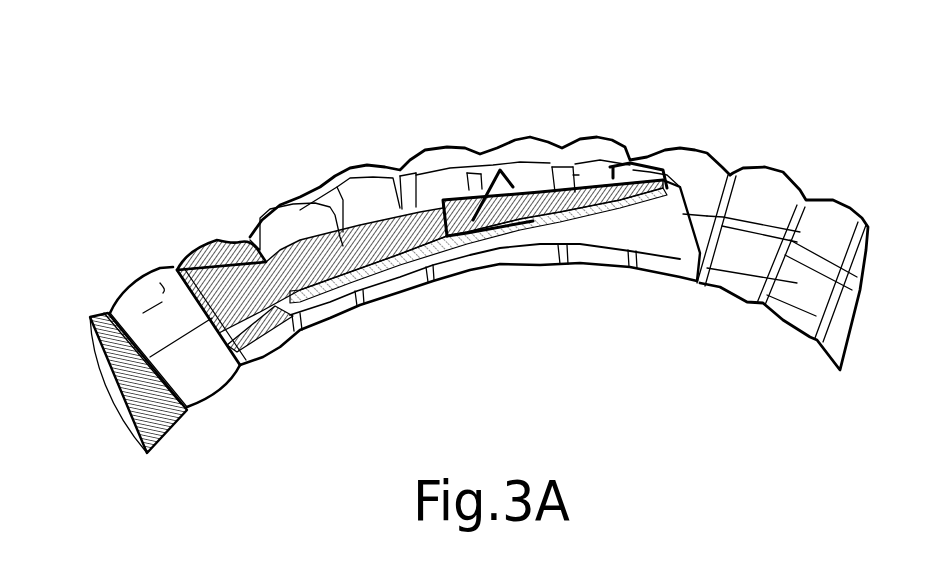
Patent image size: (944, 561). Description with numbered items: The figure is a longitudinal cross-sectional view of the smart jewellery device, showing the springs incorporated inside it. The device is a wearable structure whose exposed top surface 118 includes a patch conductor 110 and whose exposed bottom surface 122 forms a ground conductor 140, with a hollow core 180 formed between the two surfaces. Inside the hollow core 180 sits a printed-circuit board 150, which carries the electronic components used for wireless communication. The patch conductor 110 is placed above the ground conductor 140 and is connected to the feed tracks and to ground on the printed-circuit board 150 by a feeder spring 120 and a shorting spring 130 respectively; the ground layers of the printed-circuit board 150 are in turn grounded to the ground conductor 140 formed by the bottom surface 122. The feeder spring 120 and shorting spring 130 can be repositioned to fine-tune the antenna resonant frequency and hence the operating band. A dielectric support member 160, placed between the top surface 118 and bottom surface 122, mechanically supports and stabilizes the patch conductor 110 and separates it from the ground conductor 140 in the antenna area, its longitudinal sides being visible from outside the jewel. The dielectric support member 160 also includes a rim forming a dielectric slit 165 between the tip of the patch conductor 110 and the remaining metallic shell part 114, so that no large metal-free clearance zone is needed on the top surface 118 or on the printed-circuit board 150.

The patch conductor 110 is at (358, 178).
The metallic shell part 114 is at (130, 278).
The top surface 118 is at (772, 200).
The feeder spring 120 is at (497, 165).
The bottom surface 122 is at (283, 350).
The shorting spring 130 is at (626, 160).
The ground conductor 140 is at (472, 262).
The printed-circuit board 150 is at (520, 268).
The dielectric support member 160 is at (420, 293).
The dielectric slit 165 is at (207, 260).
The hollow core 180 is at (347, 255).